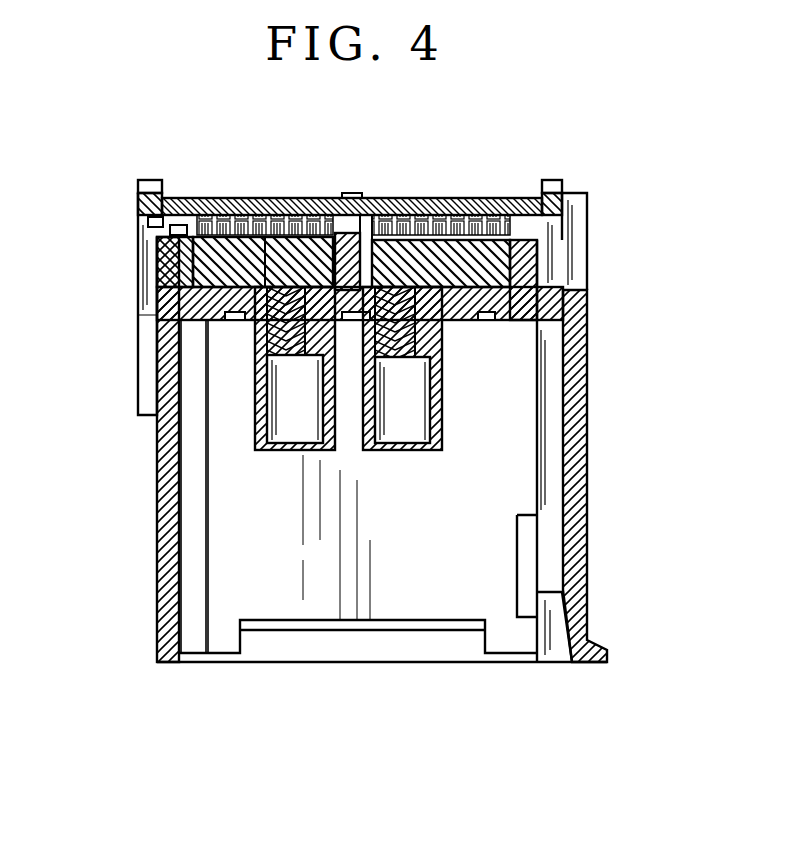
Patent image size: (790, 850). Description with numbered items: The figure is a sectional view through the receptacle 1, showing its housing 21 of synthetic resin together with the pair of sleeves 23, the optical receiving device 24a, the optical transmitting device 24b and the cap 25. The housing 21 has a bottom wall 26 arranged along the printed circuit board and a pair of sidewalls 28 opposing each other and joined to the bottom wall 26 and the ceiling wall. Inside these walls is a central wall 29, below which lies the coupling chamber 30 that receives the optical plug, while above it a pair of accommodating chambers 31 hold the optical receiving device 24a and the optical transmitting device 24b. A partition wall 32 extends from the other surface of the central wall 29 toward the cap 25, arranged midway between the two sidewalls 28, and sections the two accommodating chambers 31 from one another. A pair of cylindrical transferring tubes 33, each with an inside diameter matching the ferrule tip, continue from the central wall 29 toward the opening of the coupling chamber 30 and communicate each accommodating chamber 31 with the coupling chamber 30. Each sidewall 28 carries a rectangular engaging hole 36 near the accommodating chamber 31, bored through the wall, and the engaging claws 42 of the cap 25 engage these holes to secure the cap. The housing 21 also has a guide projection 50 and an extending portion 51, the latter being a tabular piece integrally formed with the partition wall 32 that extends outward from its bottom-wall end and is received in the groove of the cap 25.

The receptacle 1 is at (531, 178).
The housing 21 is at (588, 432).
The sleeve 23 is at (310, 366).
The optical receiving device 24a is at (268, 262).
The optical transmitting device 24b is at (444, 248).
The cap 25 is at (197, 197).
The bottom wall 26 is at (316, 570).
The sidewall 28 is at (158, 538).
The central wall 29 is at (495, 322).
The coupling chamber 30 is at (410, 575).
The accommodating chamber 31 is at (200, 262).
The partition wall 32 is at (368, 233).
The transferring tube 33 is at (329, 451).
The engaging hole 36 is at (152, 233).
The engaging claw 42 is at (137, 225).
The guide projection 50 is at (141, 180).
The extending portion 51 is at (350, 193).